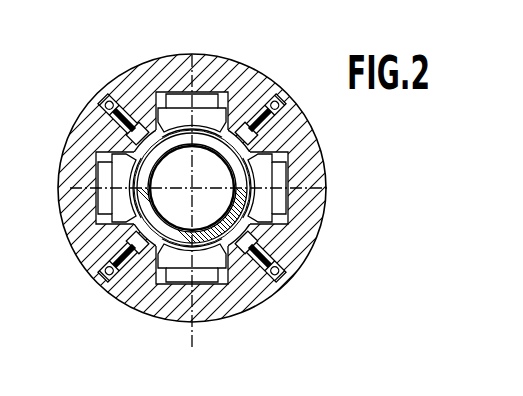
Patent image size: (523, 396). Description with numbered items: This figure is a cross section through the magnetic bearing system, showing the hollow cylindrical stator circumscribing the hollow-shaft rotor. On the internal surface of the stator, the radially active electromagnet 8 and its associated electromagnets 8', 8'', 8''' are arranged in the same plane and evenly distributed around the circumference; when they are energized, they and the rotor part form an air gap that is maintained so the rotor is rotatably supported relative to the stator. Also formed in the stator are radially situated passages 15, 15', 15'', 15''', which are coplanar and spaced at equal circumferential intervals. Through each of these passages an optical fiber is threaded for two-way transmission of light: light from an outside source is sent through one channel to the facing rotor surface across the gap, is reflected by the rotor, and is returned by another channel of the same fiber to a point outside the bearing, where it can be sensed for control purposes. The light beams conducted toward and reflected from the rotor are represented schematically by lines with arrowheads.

The electromagnet 8 is at (188, 80).
The electromagnet 8' is at (291, 182).
The electromagnet 8'' is at (192, 301).
The electromagnet 8''' is at (81, 191).
The passage 15 is at (289, 257).
The passage 15' is at (94, 259).
The passage 15'' is at (95, 117).
The passage 15''' is at (254, 84).